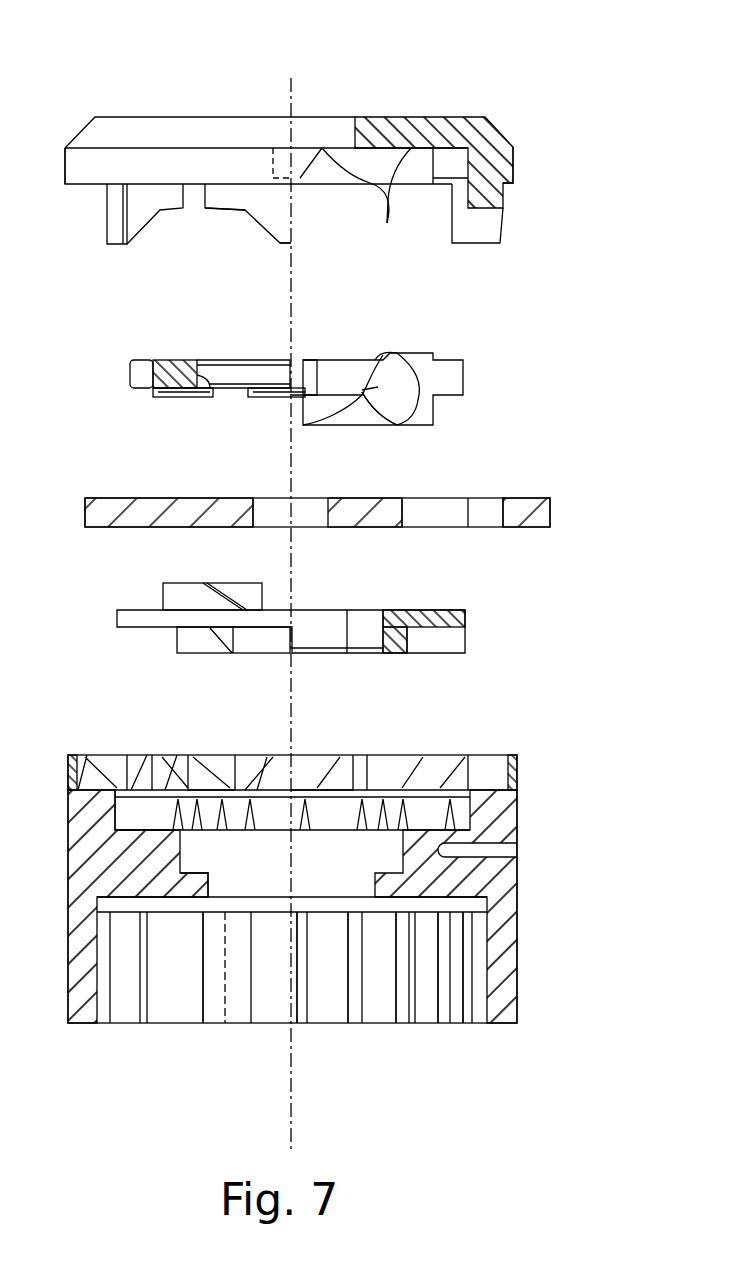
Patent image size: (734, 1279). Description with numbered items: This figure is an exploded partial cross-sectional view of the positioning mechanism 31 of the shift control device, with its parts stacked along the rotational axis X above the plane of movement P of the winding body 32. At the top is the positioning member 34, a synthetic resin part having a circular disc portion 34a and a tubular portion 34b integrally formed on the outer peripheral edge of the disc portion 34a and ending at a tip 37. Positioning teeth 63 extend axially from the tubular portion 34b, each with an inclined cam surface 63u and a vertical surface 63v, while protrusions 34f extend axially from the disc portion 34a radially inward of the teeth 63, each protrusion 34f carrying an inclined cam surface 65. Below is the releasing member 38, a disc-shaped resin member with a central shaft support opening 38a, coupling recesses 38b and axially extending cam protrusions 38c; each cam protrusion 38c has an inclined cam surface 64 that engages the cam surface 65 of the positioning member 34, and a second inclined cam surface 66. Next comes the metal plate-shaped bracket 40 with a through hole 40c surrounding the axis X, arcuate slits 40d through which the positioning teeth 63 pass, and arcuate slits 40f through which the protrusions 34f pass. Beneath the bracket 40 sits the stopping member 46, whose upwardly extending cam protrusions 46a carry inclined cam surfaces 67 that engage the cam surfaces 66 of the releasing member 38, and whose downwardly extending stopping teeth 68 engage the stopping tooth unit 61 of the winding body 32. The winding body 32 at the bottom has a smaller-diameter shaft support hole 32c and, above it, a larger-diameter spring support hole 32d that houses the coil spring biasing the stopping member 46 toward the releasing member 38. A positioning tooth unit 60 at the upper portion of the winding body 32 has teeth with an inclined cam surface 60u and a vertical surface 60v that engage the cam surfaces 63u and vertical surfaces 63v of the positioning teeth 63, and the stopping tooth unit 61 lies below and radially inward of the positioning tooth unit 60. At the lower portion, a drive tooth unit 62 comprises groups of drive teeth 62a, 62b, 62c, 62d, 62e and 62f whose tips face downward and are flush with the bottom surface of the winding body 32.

The pump head assembly 31 is at (315, 165).
The positioning member 34 is at (315, 177).
The circular disc portion 34a is at (423, 115).
The tubular portion 34b is at (513, 157).
The protrusions 34f is at (300, 183).
The tip of tubular portion 37 is at (85, 187).
The positioning teeth 63 is at (132, 232).
The inclined cam surface 63u is at (263, 235).
The vertical surface 63v is at (293, 235).
The inclined cam surface 65 is at (367, 203).
The releasing member 38 is at (358, 388).
The shaft support opening 38a is at (213, 390).
The coupling recesses 38b is at (313, 373).
The cam protrusions 38c is at (405, 382).
The inclined cam surface 64 is at (380, 357).
The inclined cam surface 66 is at (385, 415).
The bracket 40 is at (351, 501).
The through hole 40c is at (322, 518).
The arcuate slits 40d is at (503, 498).
The arcuate slit 40f is at (403, 508).
The stopping member 46 is at (339, 615).
The cam protrusions 46a is at (183, 584).
The inclined cam surface 67 is at (222, 590).
The stopping teeth 68 is at (243, 643).
The winding body 32 is at (359, 909).
The shaft support hole 32c is at (200, 890).
The spring support hole 32d is at (178, 815).
The positioning tooth unit 60 is at (465, 753).
The inclined cam surface 60u is at (246, 783).
The vertical surface 60v is at (300, 777).
The stopping tooth unit 61 is at (375, 805).
The drive tooth unit 62 is at (317, 1032).
The drive tooth 62a is at (203, 978).
The drive tooth 62b is at (300, 1000).
The drive tooth 62c is at (348, 987).
The drive tooth 62d is at (395, 987).
The drive tooth 62e is at (437, 987).
The drive tooth 62f is at (466, 990).
The rotational axis X is at (291, 110).
The plane of movement P is at (535, 797).